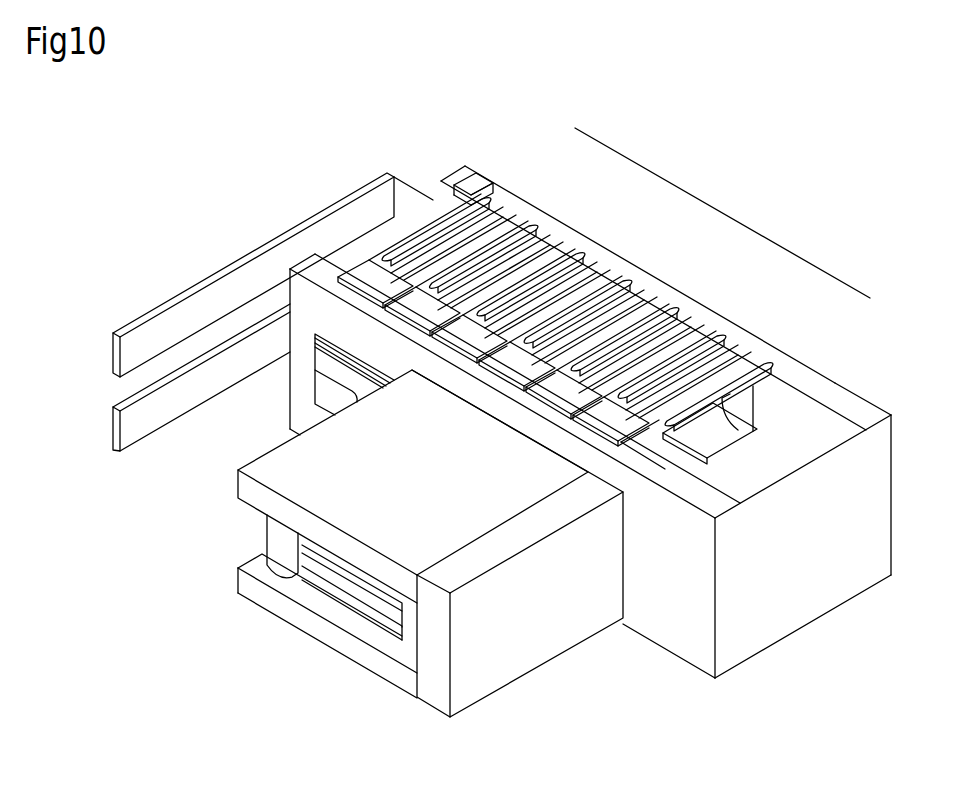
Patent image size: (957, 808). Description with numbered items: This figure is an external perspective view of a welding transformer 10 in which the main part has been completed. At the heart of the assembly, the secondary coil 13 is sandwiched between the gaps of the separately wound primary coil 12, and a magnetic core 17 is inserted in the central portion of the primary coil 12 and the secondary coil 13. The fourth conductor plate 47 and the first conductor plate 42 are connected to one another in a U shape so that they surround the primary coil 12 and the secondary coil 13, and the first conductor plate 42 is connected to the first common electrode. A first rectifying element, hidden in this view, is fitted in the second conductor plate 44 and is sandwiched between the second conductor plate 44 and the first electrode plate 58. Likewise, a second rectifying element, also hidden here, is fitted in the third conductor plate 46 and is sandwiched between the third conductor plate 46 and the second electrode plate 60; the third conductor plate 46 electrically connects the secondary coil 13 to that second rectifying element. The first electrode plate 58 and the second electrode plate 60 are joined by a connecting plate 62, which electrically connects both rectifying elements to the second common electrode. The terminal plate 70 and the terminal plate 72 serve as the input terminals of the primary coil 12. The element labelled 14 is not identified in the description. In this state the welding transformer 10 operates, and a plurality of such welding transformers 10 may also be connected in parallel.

The welding transformer 10 is at (490, 388).
The primary coil 12 is at (479, 208).
The secondary coil 13 is at (733, 215).
The guide rail 14 is at (492, 197).
The magnetic core 17 is at (812, 368).
The first conductor plate 42 is at (757, 617).
The second conductor plate 44 is at (370, 588).
The third conductor plate 46 is at (330, 568).
The fourth conductor plate 47 is at (470, 180).
The first electrode plate 58 is at (320, 463).
The second electrode plate 60 is at (248, 585).
The connecting plate 62 is at (517, 635).
The terminal plate 70 is at (184, 303).
The terminal plate 72 is at (165, 400).